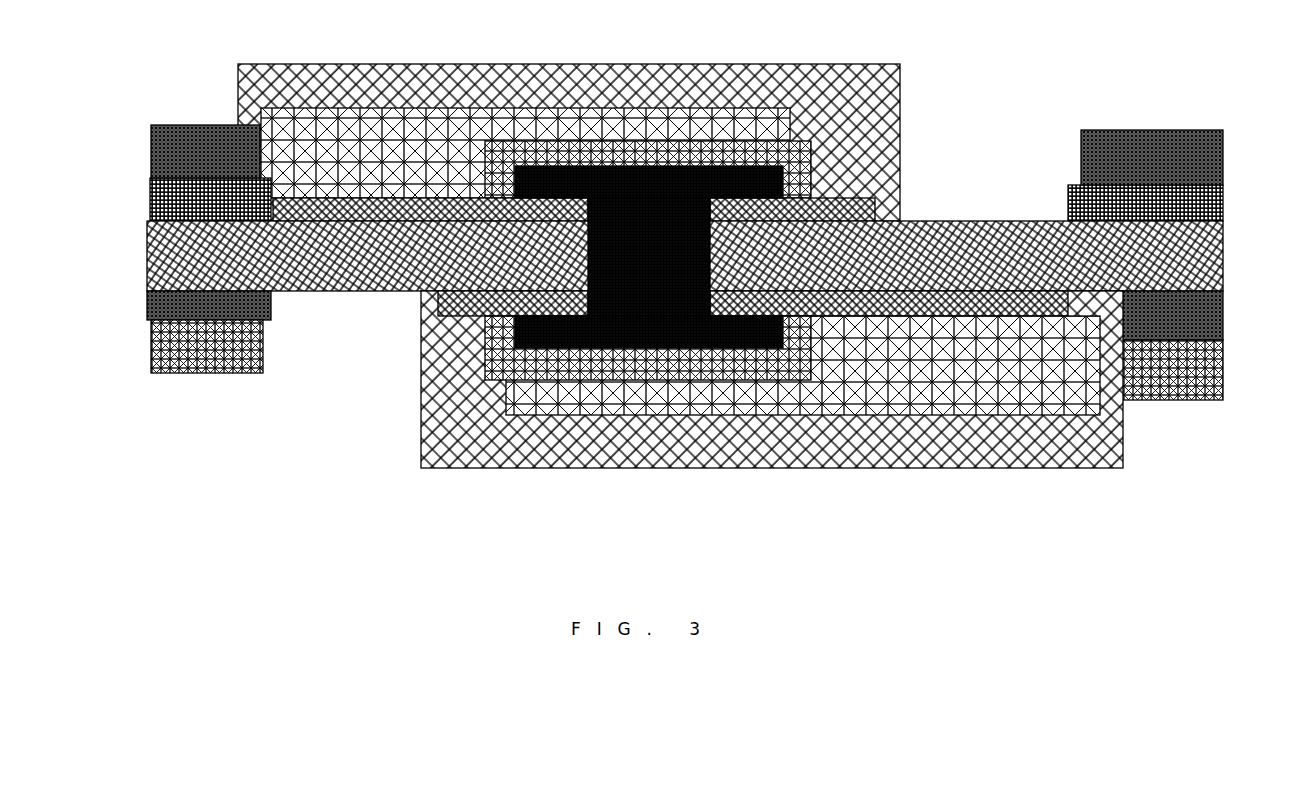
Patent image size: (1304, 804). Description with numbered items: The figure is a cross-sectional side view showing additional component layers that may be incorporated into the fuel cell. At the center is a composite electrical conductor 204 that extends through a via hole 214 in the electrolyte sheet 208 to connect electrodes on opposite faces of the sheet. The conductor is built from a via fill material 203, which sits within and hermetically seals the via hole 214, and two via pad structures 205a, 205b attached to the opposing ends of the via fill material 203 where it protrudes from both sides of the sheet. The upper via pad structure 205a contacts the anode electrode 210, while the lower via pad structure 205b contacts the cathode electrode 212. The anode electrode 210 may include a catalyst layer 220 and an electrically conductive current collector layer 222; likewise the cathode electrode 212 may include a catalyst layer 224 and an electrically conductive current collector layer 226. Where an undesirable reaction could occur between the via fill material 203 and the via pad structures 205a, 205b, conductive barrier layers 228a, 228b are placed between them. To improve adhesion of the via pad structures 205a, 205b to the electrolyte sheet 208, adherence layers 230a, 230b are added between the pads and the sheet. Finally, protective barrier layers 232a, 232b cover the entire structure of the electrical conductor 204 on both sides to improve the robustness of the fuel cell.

The via fill material 203 is at (663, 261).
The electrical conductor 204 is at (602, 118).
The via pad structure 205a is at (785, 120).
The via pad structure 205b is at (498, 387).
The electrolyte sheet 208 is at (705, 393).
The anode electrode 210 is at (687, 148).
The cathode electrode 212 is at (686, 372).
The via hole 214 is at (580, 250).
The catalyst layer 220 is at (141, 188).
The electrically conductive current collector layer 222 is at (142, 145).
The catalyst layer 224 is at (139, 293).
The electrically conductive current collector layer 226 is at (143, 340).
The conductive barrier layer 228a is at (805, 160).
The conductive barrier layer 228b is at (477, 339).
The adherence layer 230a is at (868, 205).
The adherence layer 230b is at (430, 297).
The protective barrier layer 232a is at (598, 56).
The protective barrier layer 232b is at (498, 462).